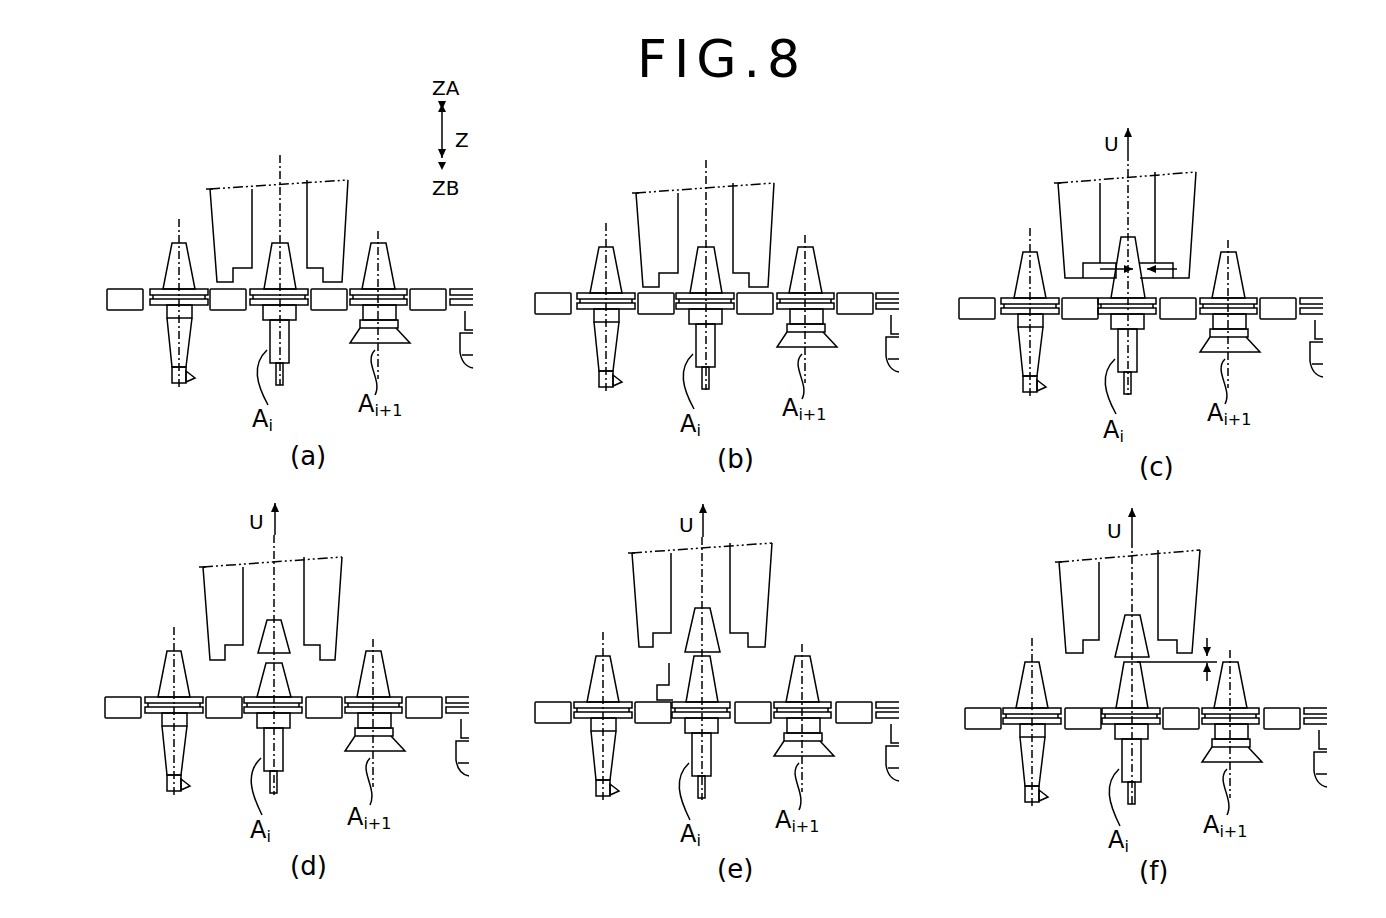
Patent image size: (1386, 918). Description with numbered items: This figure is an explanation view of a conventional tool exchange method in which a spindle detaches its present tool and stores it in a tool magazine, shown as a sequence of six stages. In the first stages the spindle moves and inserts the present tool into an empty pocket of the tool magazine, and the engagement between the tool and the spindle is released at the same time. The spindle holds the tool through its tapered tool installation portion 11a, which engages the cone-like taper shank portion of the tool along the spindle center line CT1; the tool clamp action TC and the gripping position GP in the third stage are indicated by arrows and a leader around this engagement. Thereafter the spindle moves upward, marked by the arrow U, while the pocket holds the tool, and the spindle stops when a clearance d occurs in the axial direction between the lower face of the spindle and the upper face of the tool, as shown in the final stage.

The tool installation portion 11a is at (1120, 254).
The spindle center line CT1 is at (282, 166).
The tool clamping action TC is at (1113, 288).
The gripping position GP is at (1166, 262).
The clearance d is at (1181, 657).